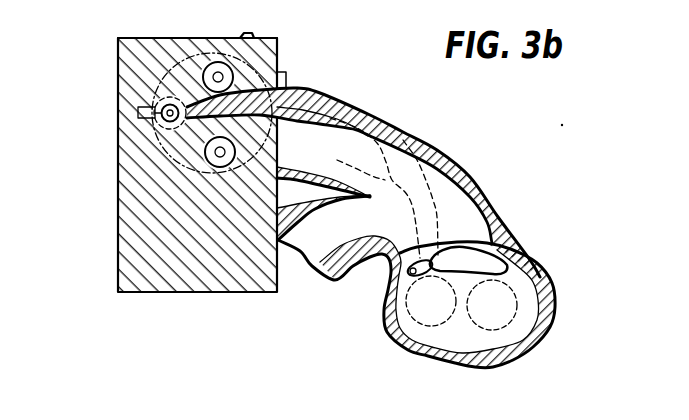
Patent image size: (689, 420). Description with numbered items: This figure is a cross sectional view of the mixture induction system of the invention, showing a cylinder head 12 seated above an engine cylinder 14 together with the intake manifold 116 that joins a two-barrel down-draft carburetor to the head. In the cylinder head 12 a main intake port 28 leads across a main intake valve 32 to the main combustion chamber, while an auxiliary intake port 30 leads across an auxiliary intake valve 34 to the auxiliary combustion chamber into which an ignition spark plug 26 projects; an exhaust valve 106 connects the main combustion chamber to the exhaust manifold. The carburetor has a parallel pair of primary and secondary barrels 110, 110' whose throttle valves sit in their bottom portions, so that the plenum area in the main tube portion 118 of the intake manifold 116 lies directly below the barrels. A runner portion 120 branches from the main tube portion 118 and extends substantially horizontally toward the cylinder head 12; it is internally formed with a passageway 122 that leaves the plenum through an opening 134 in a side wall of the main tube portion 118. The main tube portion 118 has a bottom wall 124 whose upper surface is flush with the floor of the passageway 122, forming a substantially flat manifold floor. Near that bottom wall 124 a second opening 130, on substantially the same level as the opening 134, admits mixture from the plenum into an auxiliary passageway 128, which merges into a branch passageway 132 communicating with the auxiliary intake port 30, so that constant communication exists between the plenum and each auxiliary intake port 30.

The cylinder head 12 is at (280, 51).
The cylinder 14 is at (121, 187).
The ignition spark plug 26 is at (151, 105).
The main intake port 28 is at (275, 186).
The auxiliary intake port 30 is at (204, 97).
The main intake valve 32 is at (220, 168).
The auxiliary intake valve 34 is at (152, 126).
The exhaust valve 106 is at (226, 63).
The primary barrel 110 is at (412, 337).
The secondary barrel 110' is at (509, 339).
The intake manifold 116 is at (497, 218).
The main tube portion 118 is at (554, 306).
The runner portion 120 is at (408, 133).
The passageway 122 is at (449, 160).
The bottom wall 124 is at (525, 287).
The auxiliary passageway 128 is at (425, 216).
The opening 130 is at (402, 333).
The branch passageway 132 is at (333, 99).
The opening 134 is at (505, 259).